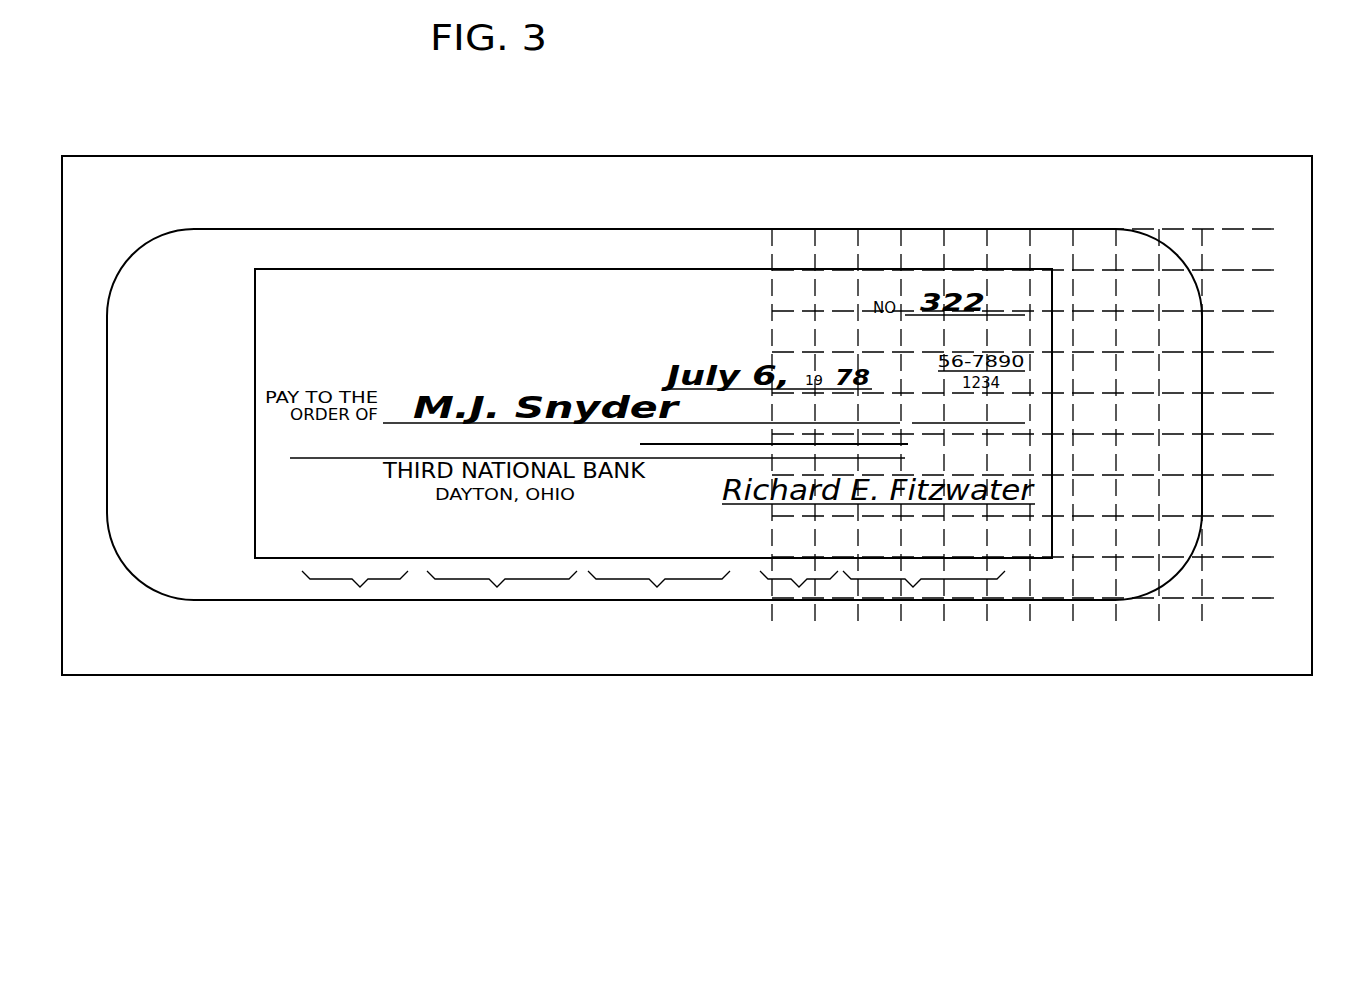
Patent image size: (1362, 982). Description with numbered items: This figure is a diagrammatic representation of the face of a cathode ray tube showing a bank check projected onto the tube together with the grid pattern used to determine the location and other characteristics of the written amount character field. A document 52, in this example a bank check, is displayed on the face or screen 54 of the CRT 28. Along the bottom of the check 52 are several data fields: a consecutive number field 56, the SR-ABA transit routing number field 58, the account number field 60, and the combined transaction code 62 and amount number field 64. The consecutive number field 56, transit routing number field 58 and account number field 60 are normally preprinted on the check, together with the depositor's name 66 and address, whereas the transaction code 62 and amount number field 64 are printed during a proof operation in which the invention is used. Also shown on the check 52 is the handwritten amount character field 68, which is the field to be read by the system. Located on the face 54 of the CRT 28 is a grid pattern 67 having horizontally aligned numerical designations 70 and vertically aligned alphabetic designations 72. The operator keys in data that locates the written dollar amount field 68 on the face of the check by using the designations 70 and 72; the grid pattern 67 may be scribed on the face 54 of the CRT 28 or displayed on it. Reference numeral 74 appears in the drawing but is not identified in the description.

The CRT 28 is at (848, 156).
The document 52 is at (330, 273).
The face or screen of the CRT 54 is at (438, 228).
The consecutive number field 56 is at (360, 587).
The SR-ABA transit routing number field 58 is at (497, 587).
The account number field 60 is at (657, 587).
The transaction code 62 is at (799, 587).
The amount number field 64 is at (913, 587).
The depositor's name 66 is at (570, 298).
The grid pattern 67 is at (1030, 238).
The handwritten amount character field 68 is at (1013, 407).
The horizontally aligned numerical designations 70 is at (1285, 352).
The vertically aligned alphabetic designations 72 is at (1073, 652).
The legal amount line 74 is at (598, 436).